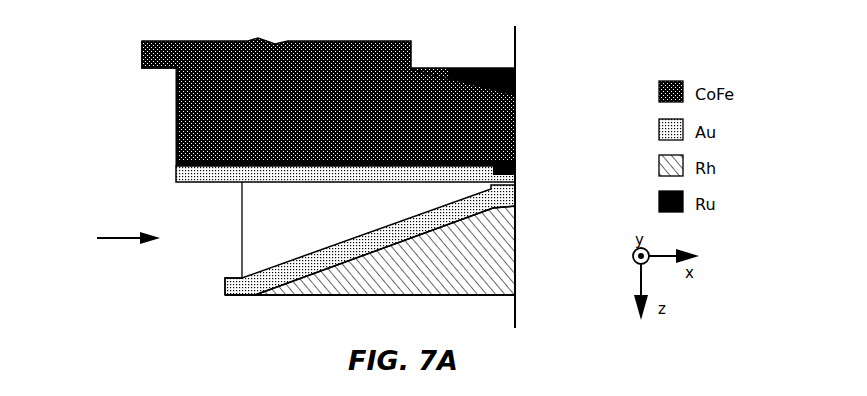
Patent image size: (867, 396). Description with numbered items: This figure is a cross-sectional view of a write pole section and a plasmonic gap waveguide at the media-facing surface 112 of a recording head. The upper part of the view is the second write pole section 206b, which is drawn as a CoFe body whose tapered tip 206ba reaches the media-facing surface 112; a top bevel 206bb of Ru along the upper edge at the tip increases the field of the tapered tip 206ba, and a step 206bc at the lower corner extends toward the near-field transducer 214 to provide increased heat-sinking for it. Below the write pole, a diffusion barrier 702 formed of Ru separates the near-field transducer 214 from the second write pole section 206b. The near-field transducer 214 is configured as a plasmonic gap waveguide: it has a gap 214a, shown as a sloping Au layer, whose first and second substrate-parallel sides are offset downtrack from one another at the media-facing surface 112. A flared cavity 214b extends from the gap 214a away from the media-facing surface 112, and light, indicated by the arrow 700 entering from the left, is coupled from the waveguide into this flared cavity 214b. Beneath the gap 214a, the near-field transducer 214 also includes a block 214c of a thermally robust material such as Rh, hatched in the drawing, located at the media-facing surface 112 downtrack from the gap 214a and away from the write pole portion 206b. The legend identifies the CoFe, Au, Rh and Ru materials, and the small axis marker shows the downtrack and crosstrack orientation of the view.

The media-facing surface 112 is at (510, 42).
The second write pole section 206b is at (168, 85).
The tapered tip 206ba is at (508, 118).
The top bevel 206bb is at (444, 76).
The step 206bc is at (508, 157).
The near-field transducer 214 is at (219, 291).
The gap 214a is at (508, 178).
The flared cavity 214b is at (260, 232).
The block 214c is at (508, 250).
The arrow 700 is at (113, 235).
The diffusion barrier 702 is at (168, 129).